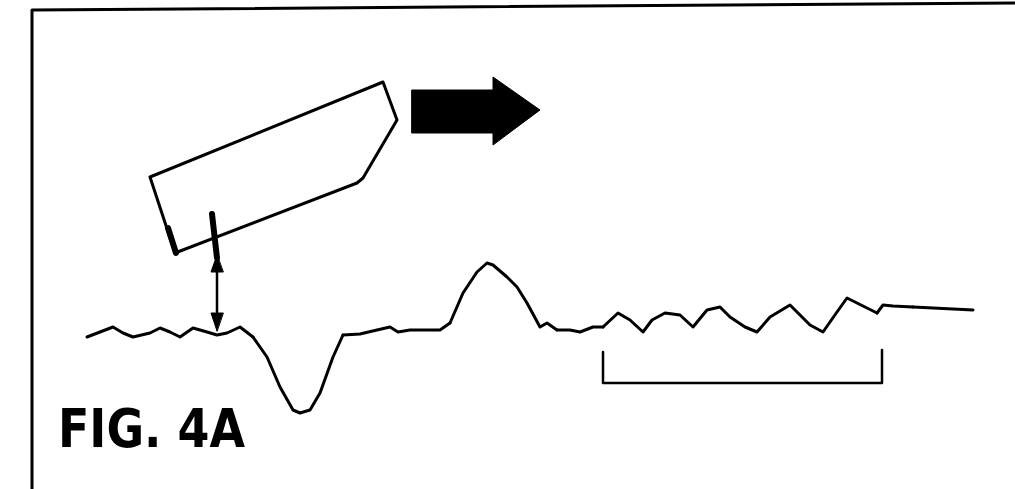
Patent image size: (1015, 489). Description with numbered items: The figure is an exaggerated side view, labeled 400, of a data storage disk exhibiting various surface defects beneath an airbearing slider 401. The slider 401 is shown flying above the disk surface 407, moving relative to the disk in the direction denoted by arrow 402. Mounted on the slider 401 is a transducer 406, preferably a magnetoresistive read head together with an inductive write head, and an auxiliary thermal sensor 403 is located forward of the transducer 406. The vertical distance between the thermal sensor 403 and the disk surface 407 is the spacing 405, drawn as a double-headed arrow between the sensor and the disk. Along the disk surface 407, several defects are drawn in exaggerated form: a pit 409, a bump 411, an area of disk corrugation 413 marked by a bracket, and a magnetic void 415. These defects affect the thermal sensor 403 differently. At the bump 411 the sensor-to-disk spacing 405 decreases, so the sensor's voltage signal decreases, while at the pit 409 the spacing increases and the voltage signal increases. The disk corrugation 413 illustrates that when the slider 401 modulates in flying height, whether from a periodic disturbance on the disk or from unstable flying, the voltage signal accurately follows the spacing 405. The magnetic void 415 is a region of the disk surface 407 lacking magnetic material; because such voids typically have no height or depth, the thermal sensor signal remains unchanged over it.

The disk surface profile with slider 400 is at (838, 68).
The slider 401 is at (376, 116).
The arrow 402 is at (507, 92).
The auxiliary thermal sensor 403 is at (213, 213).
The spacing 405 is at (220, 288).
The transducer 406 is at (177, 254).
The disk surface 407 is at (891, 292).
The pit 409 is at (272, 373).
The bump 411 is at (517, 282).
The area of disk corrugation 413 is at (750, 383).
The magnetic void 415 is at (423, 333).